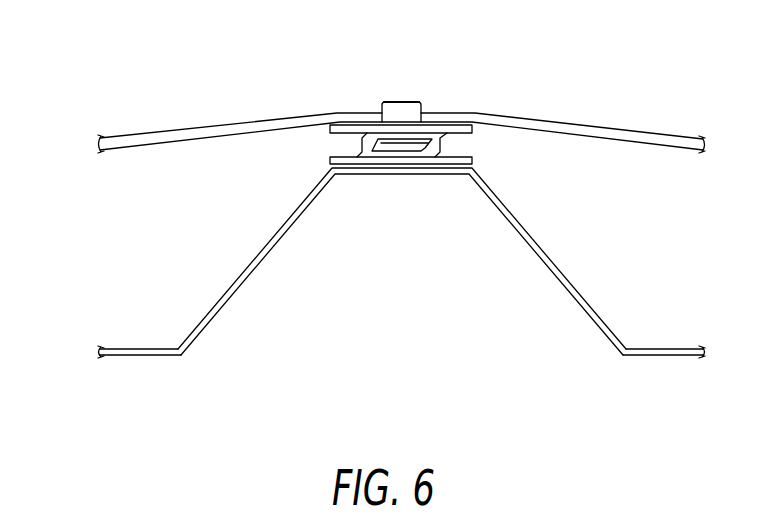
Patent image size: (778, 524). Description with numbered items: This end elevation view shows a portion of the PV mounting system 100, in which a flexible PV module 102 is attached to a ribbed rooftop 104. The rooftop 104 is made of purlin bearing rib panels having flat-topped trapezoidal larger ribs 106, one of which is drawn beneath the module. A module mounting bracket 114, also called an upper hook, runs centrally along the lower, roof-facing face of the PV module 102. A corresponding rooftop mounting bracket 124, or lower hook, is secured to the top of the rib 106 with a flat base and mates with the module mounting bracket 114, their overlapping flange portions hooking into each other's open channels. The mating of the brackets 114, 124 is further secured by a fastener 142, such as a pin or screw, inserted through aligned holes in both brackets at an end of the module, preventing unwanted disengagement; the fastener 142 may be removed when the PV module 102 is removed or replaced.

The mounting system 100 is at (108, 62).
The flexible PV module 102 is at (578, 124).
The ribbed rooftop 104 is at (665, 355).
The larger rib 106 is at (258, 262).
The module mounting bracket 114 is at (458, 128).
The rooftop mounting bracket 124 is at (363, 157).
The fastener 142 is at (403, 112).